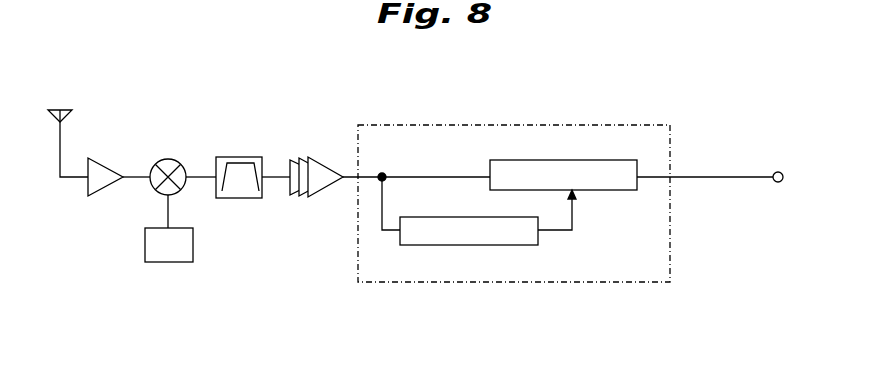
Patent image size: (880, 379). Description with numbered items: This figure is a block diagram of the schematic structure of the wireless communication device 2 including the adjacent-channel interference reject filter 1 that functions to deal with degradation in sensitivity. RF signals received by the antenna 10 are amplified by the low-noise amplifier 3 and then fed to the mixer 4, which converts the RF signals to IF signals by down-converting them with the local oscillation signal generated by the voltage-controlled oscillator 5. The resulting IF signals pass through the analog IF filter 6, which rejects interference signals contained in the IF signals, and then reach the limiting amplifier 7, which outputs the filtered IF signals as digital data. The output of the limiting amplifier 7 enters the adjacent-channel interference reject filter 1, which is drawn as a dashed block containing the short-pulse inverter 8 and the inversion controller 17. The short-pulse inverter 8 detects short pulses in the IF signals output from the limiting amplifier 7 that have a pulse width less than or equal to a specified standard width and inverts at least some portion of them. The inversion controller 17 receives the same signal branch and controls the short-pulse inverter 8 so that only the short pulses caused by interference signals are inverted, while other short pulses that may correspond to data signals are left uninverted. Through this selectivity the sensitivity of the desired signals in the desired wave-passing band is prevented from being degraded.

The adjacent-channel interference reject filter 1 is at (357, 250).
The wireless communication device 2 is at (276, 268).
The low-noise amplifier 3 is at (114, 163).
The mixer 4 is at (168, 159).
The voltage-controlled oscillator 5 is at (145, 256).
The analog IF filter 6 is at (245, 156).
The limiting amplifier 7 is at (331, 160).
The short-pulse inverter 8 is at (592, 160).
The antenna 10 is at (63, 110).
The inversion controller 17 is at (492, 246).